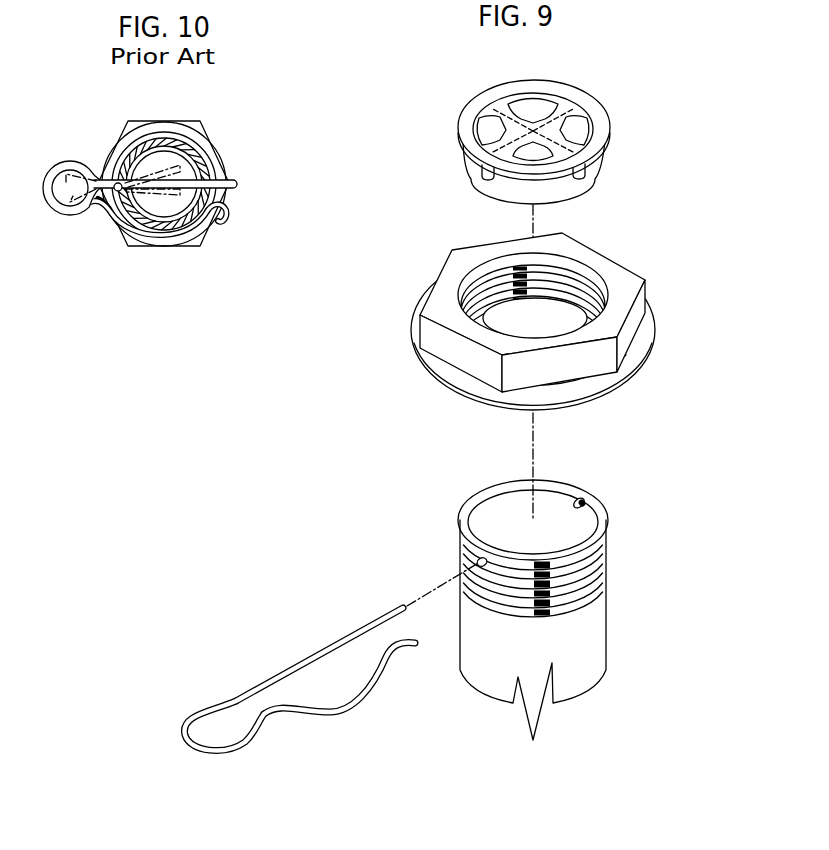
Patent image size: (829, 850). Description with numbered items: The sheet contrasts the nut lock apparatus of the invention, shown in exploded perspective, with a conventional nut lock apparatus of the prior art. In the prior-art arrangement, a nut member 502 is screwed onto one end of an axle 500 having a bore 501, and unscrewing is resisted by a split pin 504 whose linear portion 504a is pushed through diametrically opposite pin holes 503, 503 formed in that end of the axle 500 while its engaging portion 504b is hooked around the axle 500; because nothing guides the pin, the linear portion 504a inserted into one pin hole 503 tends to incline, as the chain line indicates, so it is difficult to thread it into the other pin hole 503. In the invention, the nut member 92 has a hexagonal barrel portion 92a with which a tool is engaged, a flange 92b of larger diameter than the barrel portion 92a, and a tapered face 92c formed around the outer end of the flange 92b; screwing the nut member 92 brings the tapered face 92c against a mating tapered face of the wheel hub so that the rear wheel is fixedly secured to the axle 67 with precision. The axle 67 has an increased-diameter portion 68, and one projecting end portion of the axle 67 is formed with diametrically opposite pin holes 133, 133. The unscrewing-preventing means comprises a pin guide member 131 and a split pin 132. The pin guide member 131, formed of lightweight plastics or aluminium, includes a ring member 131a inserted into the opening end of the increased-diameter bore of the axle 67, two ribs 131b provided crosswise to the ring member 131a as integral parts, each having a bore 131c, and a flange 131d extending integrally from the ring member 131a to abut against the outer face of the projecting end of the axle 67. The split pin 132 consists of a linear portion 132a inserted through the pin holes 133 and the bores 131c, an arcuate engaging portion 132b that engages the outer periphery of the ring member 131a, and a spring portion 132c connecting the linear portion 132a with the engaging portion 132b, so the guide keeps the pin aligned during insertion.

In FIG. 10, the axle 500 is at (206, 232).
In FIG. 10, the bore 501 is at (157, 206).
In FIG. 10, the nut member 502 is at (199, 146).
In FIG. 10, the pin holes 503 is at (233, 193).
In FIG. 10, the split pin 504 is at (178, 198).
In FIG. 10, the linear portion 504a is at (165, 163).
In FIG. 10, the engaging portion 504b is at (190, 240).
In FIG. 9, the pin guide member 131 is at (546, 135).
In FIG. 9, the ring member 131a is at (497, 188).
In FIG. 9, the ribs 131b is at (546, 118).
In FIG. 9, the bore 131c is at (481, 172).
In FIG. 9, the flange 131d is at (479, 120).
In FIG. 9, the nut member 92 is at (543, 337).
In FIG. 9, the hexagonal barrel portion 92a is at (618, 273).
In FIG. 9, the flange 92b is at (640, 345).
In FIG. 9, the tapered face 92c is at (549, 411).
In FIG. 9, the axle 67 is at (539, 602).
In FIG. 9, the increased-diameter portion 68 is at (596, 625).
In FIG. 9, the pin holes 133 is at (586, 498).
In FIG. 9, the split pin 132 is at (283, 670).
In FIG. 9, the linear portion 132a is at (323, 652).
In FIG. 9, the engaging portion 132b is at (363, 697).
In FIG. 9, the spring portion 132c is at (193, 743).